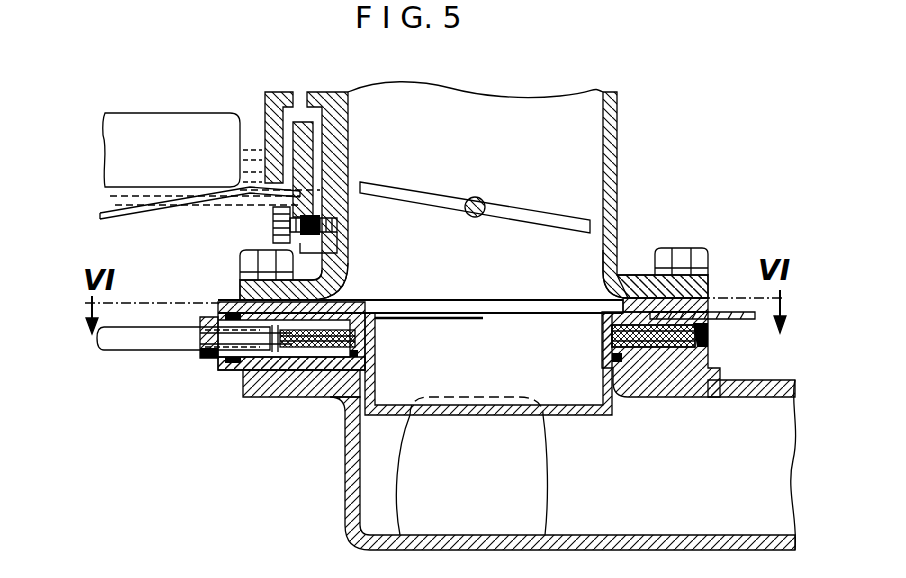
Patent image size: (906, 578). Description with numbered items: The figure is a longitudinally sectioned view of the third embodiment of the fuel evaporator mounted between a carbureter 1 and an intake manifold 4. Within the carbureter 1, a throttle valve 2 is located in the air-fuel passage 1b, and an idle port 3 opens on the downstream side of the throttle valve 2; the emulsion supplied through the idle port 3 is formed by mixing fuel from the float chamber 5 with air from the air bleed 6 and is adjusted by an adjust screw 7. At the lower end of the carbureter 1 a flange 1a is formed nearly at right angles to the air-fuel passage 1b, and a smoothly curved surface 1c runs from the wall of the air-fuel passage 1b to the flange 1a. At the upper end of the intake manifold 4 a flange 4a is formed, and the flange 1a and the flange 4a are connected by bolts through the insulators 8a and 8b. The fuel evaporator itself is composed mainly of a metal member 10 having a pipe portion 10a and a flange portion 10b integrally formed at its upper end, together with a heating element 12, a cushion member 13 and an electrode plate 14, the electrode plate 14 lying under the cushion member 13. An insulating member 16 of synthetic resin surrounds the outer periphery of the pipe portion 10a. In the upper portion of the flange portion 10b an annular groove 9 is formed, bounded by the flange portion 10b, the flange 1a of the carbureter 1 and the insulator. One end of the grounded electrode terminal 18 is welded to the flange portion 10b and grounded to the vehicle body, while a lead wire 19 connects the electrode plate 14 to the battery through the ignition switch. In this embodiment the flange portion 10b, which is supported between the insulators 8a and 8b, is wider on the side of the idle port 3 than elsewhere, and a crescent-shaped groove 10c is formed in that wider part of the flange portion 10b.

The carbureter 1 is at (617, 122).
The flange 1a is at (688, 282).
The air-fuel passage 1b is at (348, 132).
The smoothly curved surface 1c is at (618, 266).
The throttle valve 2 is at (513, 209).
The idle port 3 is at (338, 228).
The intake manifold 4 is at (762, 388).
The flange 4a is at (248, 398).
The float chamber 5 is at (232, 113).
The air bleed 6 is at (301, 100).
The adjust screw 7 is at (274, 238).
The insulator 8a is at (222, 302).
The insulator 8b is at (698, 375).
The annular groove 9 is at (335, 298).
The metal member 10 is at (376, 372).
The pipe portion 10a is at (602, 378).
The flange portion 10b is at (600, 306).
The crescent-shaped groove 10c is at (436, 318).
The heating element 12 is at (337, 400).
The cushion member 13 is at (604, 340).
The electrode plate 14 is at (300, 395).
The insulating member 16 is at (358, 338).
The grounded electrode terminal 18 is at (716, 320).
The lead wire 19 is at (130, 342).